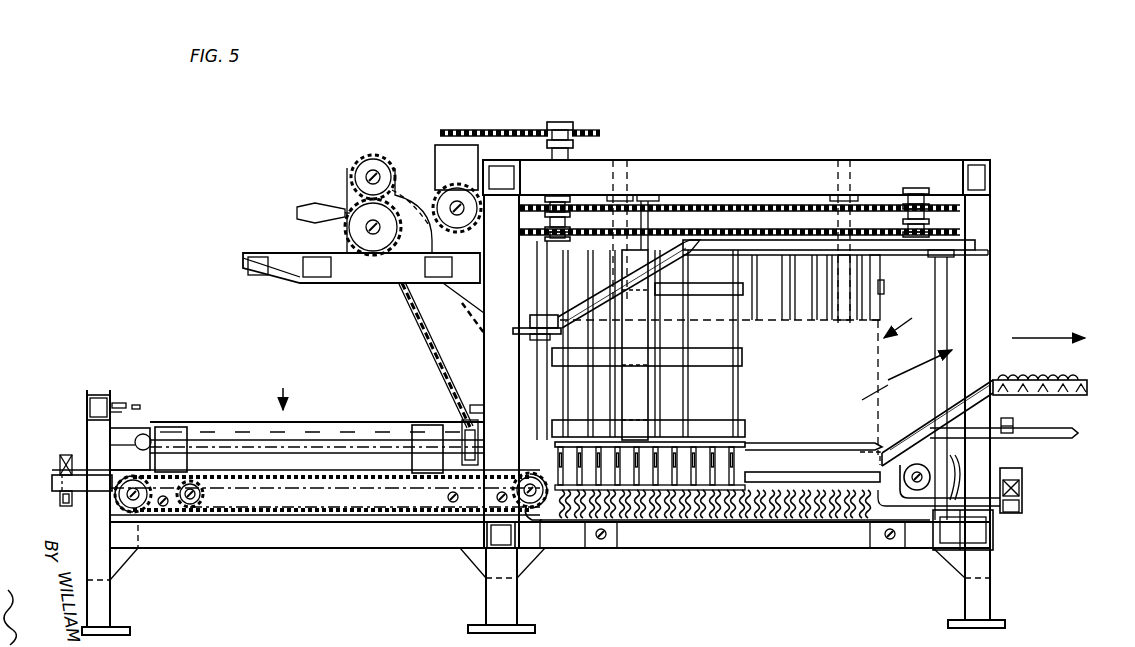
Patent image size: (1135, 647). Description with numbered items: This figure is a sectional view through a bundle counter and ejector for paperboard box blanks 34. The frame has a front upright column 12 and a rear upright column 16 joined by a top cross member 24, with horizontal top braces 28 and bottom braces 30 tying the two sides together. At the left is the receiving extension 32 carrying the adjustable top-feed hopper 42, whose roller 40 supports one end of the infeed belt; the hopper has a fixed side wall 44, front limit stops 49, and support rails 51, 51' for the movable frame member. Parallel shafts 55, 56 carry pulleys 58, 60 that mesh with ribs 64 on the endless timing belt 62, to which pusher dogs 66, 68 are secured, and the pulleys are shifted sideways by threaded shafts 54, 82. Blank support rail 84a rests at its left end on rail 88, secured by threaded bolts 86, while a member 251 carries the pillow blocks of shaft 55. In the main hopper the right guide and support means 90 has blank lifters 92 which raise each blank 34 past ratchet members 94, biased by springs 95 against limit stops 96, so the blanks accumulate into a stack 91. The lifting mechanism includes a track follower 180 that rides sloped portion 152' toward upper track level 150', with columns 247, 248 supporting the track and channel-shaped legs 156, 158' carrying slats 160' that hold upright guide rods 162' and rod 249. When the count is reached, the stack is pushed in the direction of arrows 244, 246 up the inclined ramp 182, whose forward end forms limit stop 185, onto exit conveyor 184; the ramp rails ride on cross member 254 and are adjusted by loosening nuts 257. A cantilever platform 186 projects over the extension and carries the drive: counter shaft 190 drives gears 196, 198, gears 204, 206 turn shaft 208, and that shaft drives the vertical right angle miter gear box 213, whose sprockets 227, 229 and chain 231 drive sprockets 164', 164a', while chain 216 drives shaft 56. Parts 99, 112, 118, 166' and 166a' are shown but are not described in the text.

The front upright column 12 is at (510, 292).
The rear upright column 16 is at (992, 293).
The top cross member 24 is at (740, 162).
The top brace 28 is at (521, 179).
The bottom brace 30 is at (480, 552).
The receiving extension 32 is at (273, 385).
The paperboard box blank 34 is at (822, 442).
The roller 40 is at (293, 408).
The adjustable top-feed hopper 42 is at (680, 638).
The fixed side wall 44 is at (145, 435).
The front limit stop 49 is at (181, 428).
The support rail 51 is at (128, 390).
The support rail 51' is at (468, 408).
The threaded shaft 54 is at (174, 510).
The timing belt idler pulley shaft 55 is at (122, 506).
The timing belt drive shaft 56 is at (535, 510).
The pulley 58 is at (144, 517).
The pulley 60 is at (500, 548).
The endless timing belt 62 is at (245, 433).
The ribs 64 is at (258, 478).
The pusher dog 66 is at (143, 486).
The pusher dog 68 is at (530, 553).
The threaded shaft 82 is at (500, 506).
The blank support rail 84a is at (80, 475).
The threaded bolt 86 is at (62, 458).
The rail 88 is at (60, 497).
The right guide and support means 90 is at (898, 313).
The stack 91 is at (870, 358).
The blank lifter 92 is at (737, 518).
The ratchet member 94 is at (745, 463).
The spring 95 is at (692, 515).
The limit stop 96 is at (745, 444).
The pivot 99 is at (922, 477).
The bolt 112 is at (601, 538).
The bolt 118 is at (888, 538).
The upper track level 150' is at (774, 347).
The sloped portion 152' is at (708, 244).
The channel-shaped leg 156 is at (645, 393).
The channel-shaped leg 158' is at (836, 307).
The slat 160' is at (669, 366).
The upright guide rod 162' is at (780, 302).
The sprocket 164' is at (740, 193).
The sprocket 164a' is at (740, 238).
The sprocket 166' is at (895, 187).
The lower sprocket 166a' is at (974, 222).
The track follower 180 is at (553, 312).
The upwardly inclined ramp 182 is at (910, 435).
The conveyor 184 is at (1088, 373).
The limit stop 185 is at (878, 462).
The cantilever platform 186 is at (357, 284).
The counter shaft 190 is at (366, 175).
The gear 196 is at (375, 158).
The gear 198 is at (345, 226).
The gear 204 is at (420, 237).
The gear 206 is at (432, 204).
The shaft 208 is at (458, 198).
The vertical right angle miter gear box 213 is at (435, 147).
The chain 216 is at (425, 340).
The sprocket 227 is at (464, 127).
The sprocket 229 is at (570, 131).
The chain 231 is at (510, 128).
The arrow 244 is at (900, 375).
The arrow 246 is at (1030, 340).
The column 247 is at (545, 372).
The column 248 is at (950, 270).
The rod 249 is at (543, 445).
The member 251 is at (86, 418).
The cross member 254 is at (1022, 508).
The nut 257 is at (1000, 420).